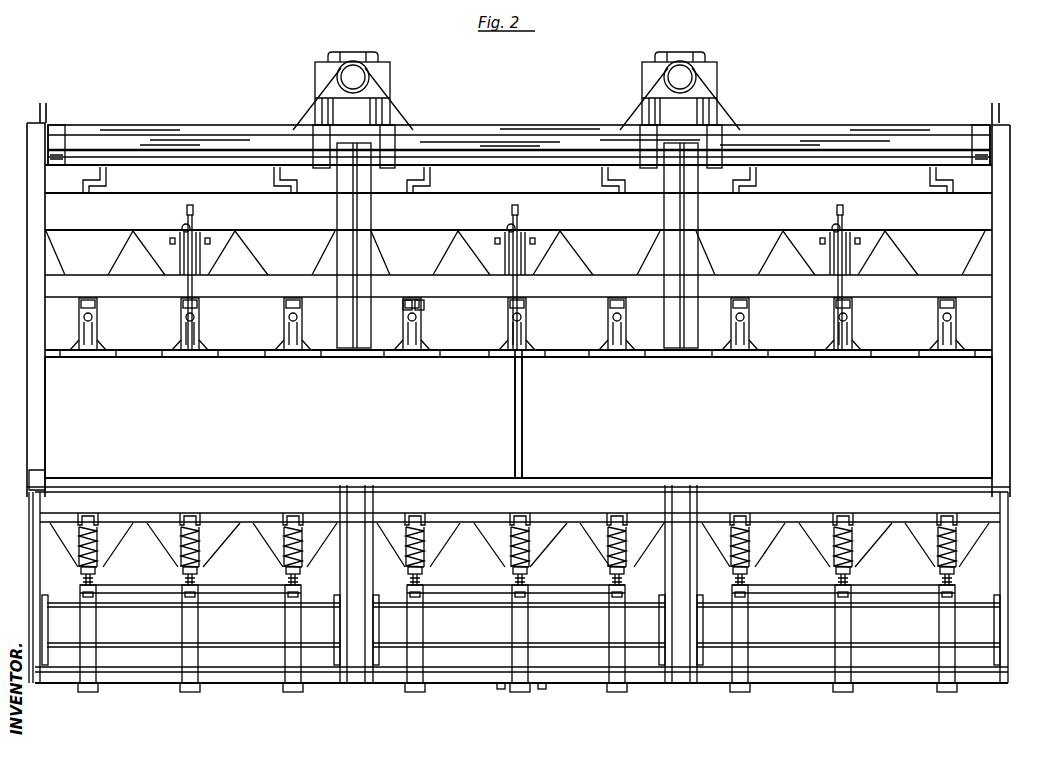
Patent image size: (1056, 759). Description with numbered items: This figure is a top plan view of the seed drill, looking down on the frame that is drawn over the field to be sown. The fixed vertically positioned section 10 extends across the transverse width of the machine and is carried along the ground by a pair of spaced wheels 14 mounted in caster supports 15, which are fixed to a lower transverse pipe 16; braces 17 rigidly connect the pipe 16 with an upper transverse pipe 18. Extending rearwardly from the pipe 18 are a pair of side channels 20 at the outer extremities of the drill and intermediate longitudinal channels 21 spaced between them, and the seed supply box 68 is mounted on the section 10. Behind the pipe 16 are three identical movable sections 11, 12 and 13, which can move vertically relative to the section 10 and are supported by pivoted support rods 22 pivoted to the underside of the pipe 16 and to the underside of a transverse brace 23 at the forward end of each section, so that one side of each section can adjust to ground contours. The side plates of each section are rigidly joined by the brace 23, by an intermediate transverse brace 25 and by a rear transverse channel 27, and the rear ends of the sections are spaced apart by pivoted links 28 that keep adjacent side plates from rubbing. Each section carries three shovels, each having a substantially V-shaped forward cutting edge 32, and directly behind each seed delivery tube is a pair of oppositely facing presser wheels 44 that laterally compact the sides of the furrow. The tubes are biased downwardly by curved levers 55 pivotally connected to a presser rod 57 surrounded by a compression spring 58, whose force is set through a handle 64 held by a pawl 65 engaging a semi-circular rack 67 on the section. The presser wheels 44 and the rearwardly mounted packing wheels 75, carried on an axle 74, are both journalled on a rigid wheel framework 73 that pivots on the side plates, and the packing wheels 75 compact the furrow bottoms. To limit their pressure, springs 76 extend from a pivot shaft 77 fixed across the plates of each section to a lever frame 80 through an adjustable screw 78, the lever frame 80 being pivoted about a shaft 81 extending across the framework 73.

The vertically positioned section 10 is at (1018, 144).
The movable section 11 is at (832, 191).
The movable section 12 is at (501, 192).
The movable section 13 is at (176, 192).
The wheels 14 is at (364, 57).
The caster supports 15 is at (382, 70).
The lower transverse pipe 16 is at (912, 132).
The braces 17 is at (968, 128).
The upper transverse pipe 18 is at (862, 135).
The side channels 20 is at (35, 208).
The intermediate longitudinal channels 21 is at (366, 226).
The pivoted support rods 22 is at (104, 180).
The transverse brace 23 is at (292, 221).
The intermediate transverse brace 25 is at (306, 272).
The rear transverse channel 27 is at (245, 675).
The pivoted links 28 is at (538, 692).
The forward cutting edge 32 is at (98, 332).
The presser wheels 44 is at (72, 566).
The curved lever 55 is at (104, 253).
The presser rod 57 is at (424, 305).
The compression spring 58 is at (403, 306).
The handle 64 is at (184, 228).
The pawl 65 is at (200, 243).
The semi-circular rack 67 is at (196, 217).
The seed supply box 68 is at (610, 428).
The wheel framework 73 is at (48, 628).
The axle 74 is at (178, 644).
The packing wheels 75 is at (97, 630).
The springs 76 is at (100, 518).
The pivot shaft 77 is at (248, 518).
The adjustable screw 78 is at (94, 579).
The lever frame 80 is at (160, 590).
The shaft 81 is at (262, 606).